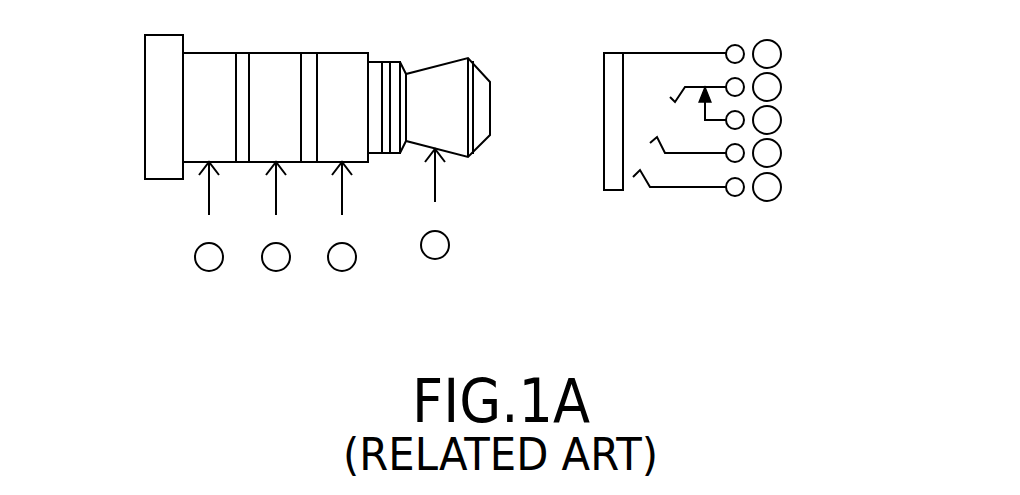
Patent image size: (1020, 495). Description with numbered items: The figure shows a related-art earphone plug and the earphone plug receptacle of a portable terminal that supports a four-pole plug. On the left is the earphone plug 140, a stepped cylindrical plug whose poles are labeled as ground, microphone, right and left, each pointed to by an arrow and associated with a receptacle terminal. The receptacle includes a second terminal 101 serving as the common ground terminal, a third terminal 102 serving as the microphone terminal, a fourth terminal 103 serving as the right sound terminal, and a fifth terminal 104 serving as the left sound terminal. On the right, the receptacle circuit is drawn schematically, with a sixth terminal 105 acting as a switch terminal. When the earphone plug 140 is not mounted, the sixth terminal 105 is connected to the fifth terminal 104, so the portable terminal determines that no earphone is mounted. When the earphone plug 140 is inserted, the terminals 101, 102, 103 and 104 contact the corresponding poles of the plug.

The earphone plug 140 is at (145, 101).
The second terminal 101 is at (209, 271).
The third terminal 102 is at (276, 271).
The fourth terminal 103 is at (342, 271).
The fifth terminal 104 is at (435, 259).
The sixth terminal 105 is at (828, 121).